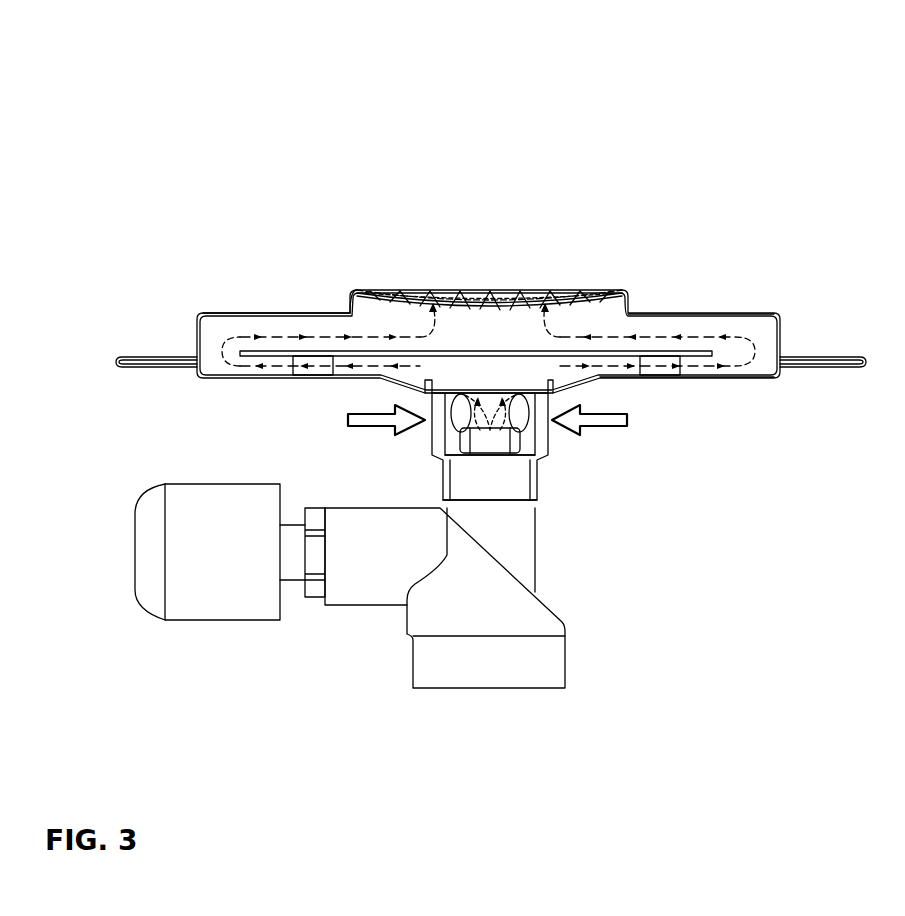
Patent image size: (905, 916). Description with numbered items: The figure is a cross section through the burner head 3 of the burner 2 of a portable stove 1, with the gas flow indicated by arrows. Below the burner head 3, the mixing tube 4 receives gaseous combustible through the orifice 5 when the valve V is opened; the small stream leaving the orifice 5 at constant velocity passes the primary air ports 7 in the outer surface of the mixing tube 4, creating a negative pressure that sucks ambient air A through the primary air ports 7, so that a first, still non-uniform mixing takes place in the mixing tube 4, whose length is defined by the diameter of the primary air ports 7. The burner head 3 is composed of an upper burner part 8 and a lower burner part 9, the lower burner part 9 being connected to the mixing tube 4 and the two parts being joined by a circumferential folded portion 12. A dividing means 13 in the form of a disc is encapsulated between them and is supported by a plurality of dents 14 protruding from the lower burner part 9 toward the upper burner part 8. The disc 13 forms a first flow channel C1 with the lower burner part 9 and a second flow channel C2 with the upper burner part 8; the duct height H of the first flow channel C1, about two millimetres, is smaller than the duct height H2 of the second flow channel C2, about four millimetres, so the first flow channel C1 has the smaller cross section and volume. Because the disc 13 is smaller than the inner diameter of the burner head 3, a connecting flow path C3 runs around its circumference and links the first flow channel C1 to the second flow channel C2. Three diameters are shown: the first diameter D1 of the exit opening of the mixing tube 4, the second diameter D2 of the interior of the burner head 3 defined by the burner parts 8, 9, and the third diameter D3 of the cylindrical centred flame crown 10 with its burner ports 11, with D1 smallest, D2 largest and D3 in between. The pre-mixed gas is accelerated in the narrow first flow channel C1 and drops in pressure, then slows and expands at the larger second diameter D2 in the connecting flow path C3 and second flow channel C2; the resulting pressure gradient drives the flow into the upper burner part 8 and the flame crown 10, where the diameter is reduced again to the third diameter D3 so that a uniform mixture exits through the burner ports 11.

The portable stove 1 is at (58, 340).
The burner 2 is at (272, 284).
The burner head 3 is at (695, 318).
The mixing tube 4 is at (548, 432).
The orifice 5 is at (500, 442).
The primary air ports 7 is at (455, 424).
The upper burner part 8 is at (291, 317).
The lower burner part 9 is at (748, 380).
The flame crown 10 is at (350, 311).
The burner ports 11 is at (425, 292).
The circumferential folded portion 12 is at (818, 370).
The dividing means 13 is at (665, 352).
The dents 14 is at (303, 370).
The valve V is at (195, 500).
The ambient air A is at (492, 418).
The first flow channel C1 is at (703, 380).
The second flow channel C2 is at (285, 345).
The connecting flow path C3 is at (763, 327).
The duct height of the first flow channel H is at (480, 357).
The duct height of the second flow channel H2 is at (198, 375).
The first diameter D1 is at (445, 378).
The second diameter D2 is at (780, 313).
The third diameter D3 is at (625, 313).